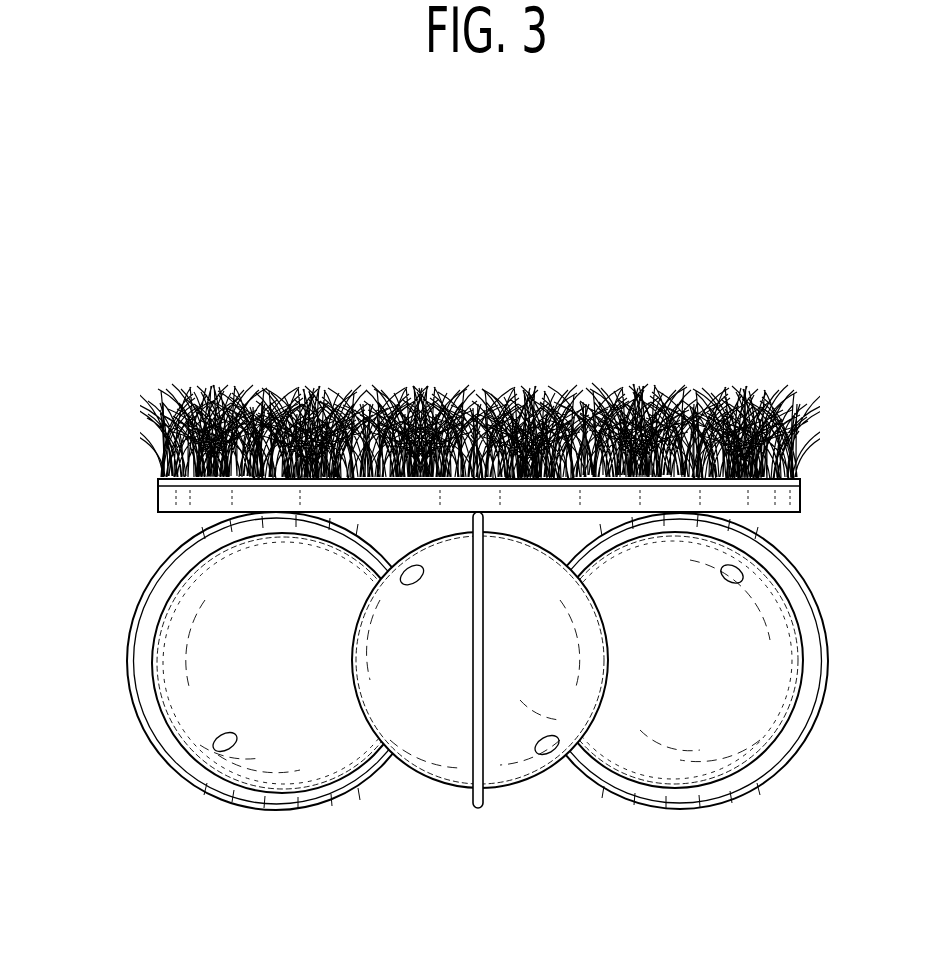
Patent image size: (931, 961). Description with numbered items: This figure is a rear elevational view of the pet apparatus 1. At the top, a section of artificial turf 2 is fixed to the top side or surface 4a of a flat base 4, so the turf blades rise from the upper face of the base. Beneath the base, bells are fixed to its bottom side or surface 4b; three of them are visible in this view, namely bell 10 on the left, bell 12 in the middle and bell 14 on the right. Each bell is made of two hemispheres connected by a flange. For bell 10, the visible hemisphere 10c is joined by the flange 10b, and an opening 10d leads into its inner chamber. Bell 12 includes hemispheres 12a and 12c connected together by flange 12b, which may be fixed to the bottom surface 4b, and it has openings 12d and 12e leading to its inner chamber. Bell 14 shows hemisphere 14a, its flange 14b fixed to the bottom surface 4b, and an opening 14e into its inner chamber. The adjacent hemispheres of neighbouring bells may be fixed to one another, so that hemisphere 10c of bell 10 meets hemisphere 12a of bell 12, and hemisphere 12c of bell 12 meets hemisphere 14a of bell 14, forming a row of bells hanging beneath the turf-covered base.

The pet apparatus 1 is at (606, 325).
The section of artificial turf 2 is at (400, 440).
The base 4 is at (420, 440).
The top side or surface 4a is at (158, 477).
The bottom side or surface 4b is at (355, 512).
The bell 10 is at (276, 661).
The flange 10b is at (147, 667).
The hemisphere 10c is at (305, 704).
The opening 10d is at (223, 734).
The bell 12 is at (480, 660).
The hemisphere 12a is at (466, 619).
The flange 12b is at (483, 657).
The hemisphere 12c is at (553, 614).
The opening 12d is at (548, 737).
The opening 12e is at (412, 582).
The bell 14 is at (680, 661).
The hemisphere 14a is at (667, 632).
The flange 14b is at (797, 588).
The opening 14e is at (720, 576).